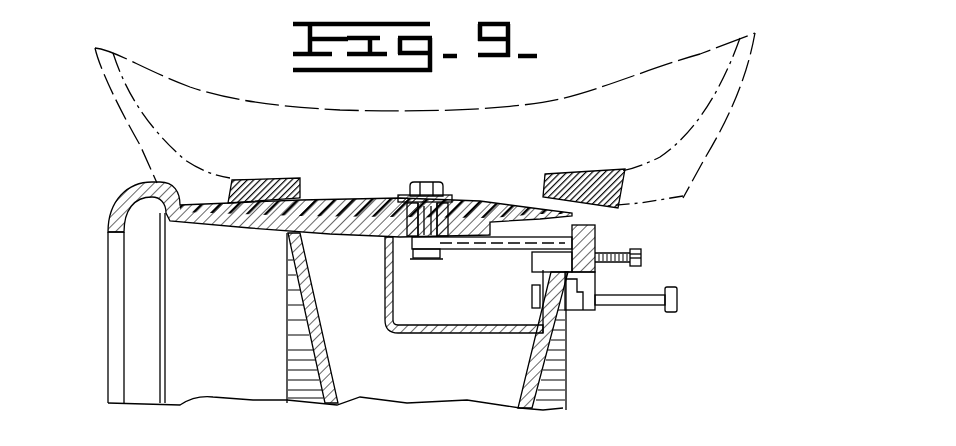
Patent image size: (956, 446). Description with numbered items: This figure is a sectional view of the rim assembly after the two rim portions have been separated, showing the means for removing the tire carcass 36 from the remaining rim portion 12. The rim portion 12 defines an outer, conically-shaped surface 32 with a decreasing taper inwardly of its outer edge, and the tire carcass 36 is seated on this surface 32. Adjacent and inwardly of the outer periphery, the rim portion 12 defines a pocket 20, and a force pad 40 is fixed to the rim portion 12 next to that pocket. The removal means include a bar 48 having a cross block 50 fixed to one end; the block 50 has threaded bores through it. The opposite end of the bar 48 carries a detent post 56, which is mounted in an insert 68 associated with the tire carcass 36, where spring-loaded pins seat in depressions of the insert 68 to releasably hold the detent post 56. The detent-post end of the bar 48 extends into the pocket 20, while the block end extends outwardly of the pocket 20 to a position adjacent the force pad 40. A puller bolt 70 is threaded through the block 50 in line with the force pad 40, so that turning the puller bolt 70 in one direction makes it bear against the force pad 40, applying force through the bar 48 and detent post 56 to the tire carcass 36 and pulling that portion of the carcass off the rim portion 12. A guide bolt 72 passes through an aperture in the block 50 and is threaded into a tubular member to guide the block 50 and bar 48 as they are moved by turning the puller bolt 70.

The rim portion 12 is at (115, 276).
The pocket 20 is at (421, 318).
The conically-shaped surface 32 is at (198, 205).
The tire carcass 36 is at (130, 127).
The force pad 40 is at (538, 262).
The bar 48 is at (492, 250).
The cross block 50 is at (597, 230).
The detent post 56 is at (432, 261).
The insert 68 is at (372, 200).
The puller bolt 70 is at (643, 257).
The guide bolt 72 is at (651, 307).